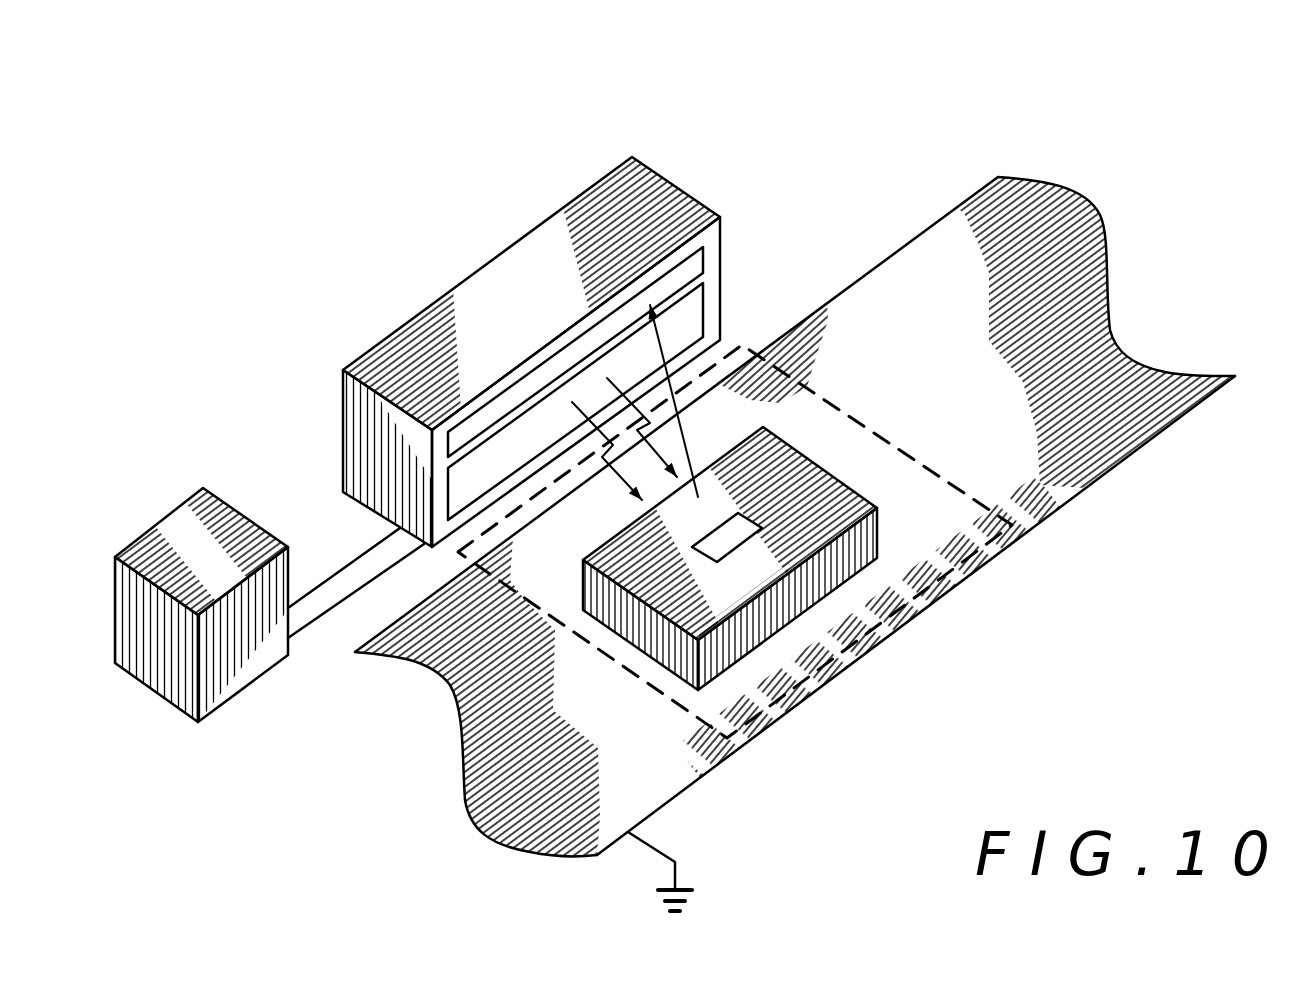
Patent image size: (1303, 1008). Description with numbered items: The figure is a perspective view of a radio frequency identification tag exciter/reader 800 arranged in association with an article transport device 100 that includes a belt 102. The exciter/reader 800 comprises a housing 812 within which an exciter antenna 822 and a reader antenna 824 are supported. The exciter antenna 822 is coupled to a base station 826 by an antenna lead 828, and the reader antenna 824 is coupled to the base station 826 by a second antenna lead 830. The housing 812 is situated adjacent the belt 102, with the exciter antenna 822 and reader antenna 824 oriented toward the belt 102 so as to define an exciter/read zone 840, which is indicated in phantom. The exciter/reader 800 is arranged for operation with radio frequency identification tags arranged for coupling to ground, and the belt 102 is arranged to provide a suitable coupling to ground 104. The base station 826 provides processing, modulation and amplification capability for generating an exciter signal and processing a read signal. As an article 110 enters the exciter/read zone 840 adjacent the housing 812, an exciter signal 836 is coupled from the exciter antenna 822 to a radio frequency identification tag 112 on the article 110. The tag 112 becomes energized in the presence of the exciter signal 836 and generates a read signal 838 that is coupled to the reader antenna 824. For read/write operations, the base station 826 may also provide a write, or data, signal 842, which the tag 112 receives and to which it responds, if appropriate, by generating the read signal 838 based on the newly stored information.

The article transport device 100 is at (1034, 537).
The belt 102 is at (707, 752).
The ground 104 is at (690, 888).
The article 110 is at (774, 558).
The radio frequency identification tag 112 is at (742, 516).
The radio frequency identification tag exciter/reader 800 is at (572, 307).
The housing 812 is at (572, 348).
The exciter antenna 822 is at (696, 303).
The reader antenna 824 is at (697, 258).
The base station 826 is at (195, 518).
The antenna lead 828 is at (356, 606).
The antenna lead 830 is at (318, 618).
The exciter signal 836 is at (613, 473).
The read signal 838 is at (690, 462).
The exciter/read zone 840 is at (950, 548).
The write signal 842 is at (655, 450).